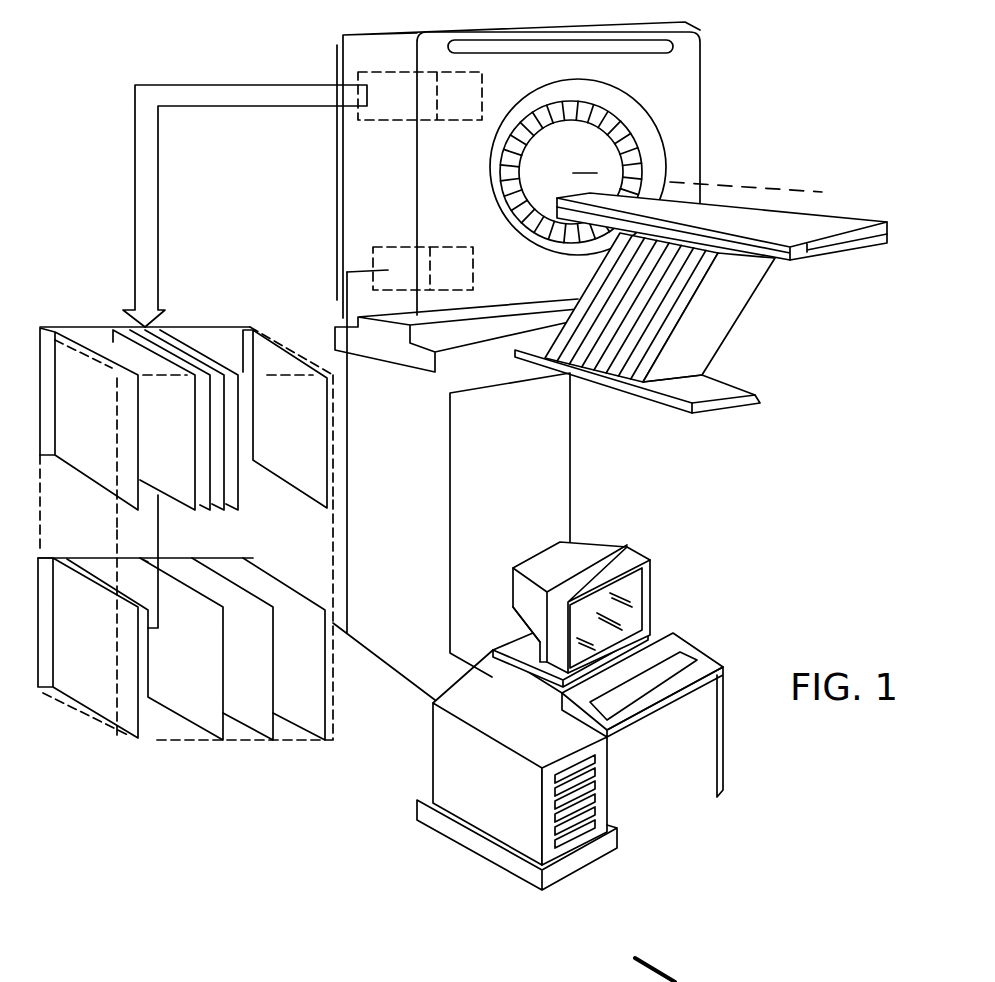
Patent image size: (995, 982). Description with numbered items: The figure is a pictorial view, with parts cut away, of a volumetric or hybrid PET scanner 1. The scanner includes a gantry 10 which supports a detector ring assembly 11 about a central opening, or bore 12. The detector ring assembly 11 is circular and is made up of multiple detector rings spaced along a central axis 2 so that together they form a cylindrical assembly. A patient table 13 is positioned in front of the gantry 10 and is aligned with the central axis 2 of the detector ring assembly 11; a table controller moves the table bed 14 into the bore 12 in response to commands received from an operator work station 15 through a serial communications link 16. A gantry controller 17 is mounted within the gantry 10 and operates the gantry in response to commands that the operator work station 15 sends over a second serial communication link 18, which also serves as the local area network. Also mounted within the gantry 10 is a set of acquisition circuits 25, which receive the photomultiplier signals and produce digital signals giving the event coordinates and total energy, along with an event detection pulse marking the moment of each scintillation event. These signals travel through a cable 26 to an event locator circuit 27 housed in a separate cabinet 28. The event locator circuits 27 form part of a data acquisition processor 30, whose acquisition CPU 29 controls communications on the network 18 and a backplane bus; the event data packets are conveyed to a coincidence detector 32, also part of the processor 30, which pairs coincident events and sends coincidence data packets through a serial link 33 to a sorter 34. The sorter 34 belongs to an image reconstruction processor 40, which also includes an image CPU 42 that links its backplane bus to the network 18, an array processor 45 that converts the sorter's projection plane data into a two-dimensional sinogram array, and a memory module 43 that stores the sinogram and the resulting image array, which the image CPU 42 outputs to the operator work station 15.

The PET scanner 1 is at (262, 50).
The central axis 2 is at (802, 187).
The gantry 10 is at (702, 87).
The detector ring assembly 11 is at (638, 132).
The bore 12 is at (593, 166).
The patient table 13 is at (747, 329).
The table bed 14 is at (830, 231).
The operator work station 15 is at (609, 529).
The serial communications link 16 is at (453, 472).
The gantry controller 17 is at (372, 246).
The second serial communication link 18 is at (347, 505).
The acquisition circuits 25 is at (346, 55).
The cable 26 is at (158, 281).
The event locator circuit 27 is at (153, 442).
The cabinet 28 is at (193, 742).
The acquisition CPU 29 is at (273, 444).
The data acquisition processor 30 is at (97, 322).
The coincidence detector 32 is at (66, 430).
The serial link 33 is at (163, 533).
The sorter 34 is at (66, 657).
The image reconstruction processor 40 is at (93, 552).
The image CPU 42 is at (284, 677).
The memory module 43 is at (164, 677).
The array processor 45 is at (231, 677).